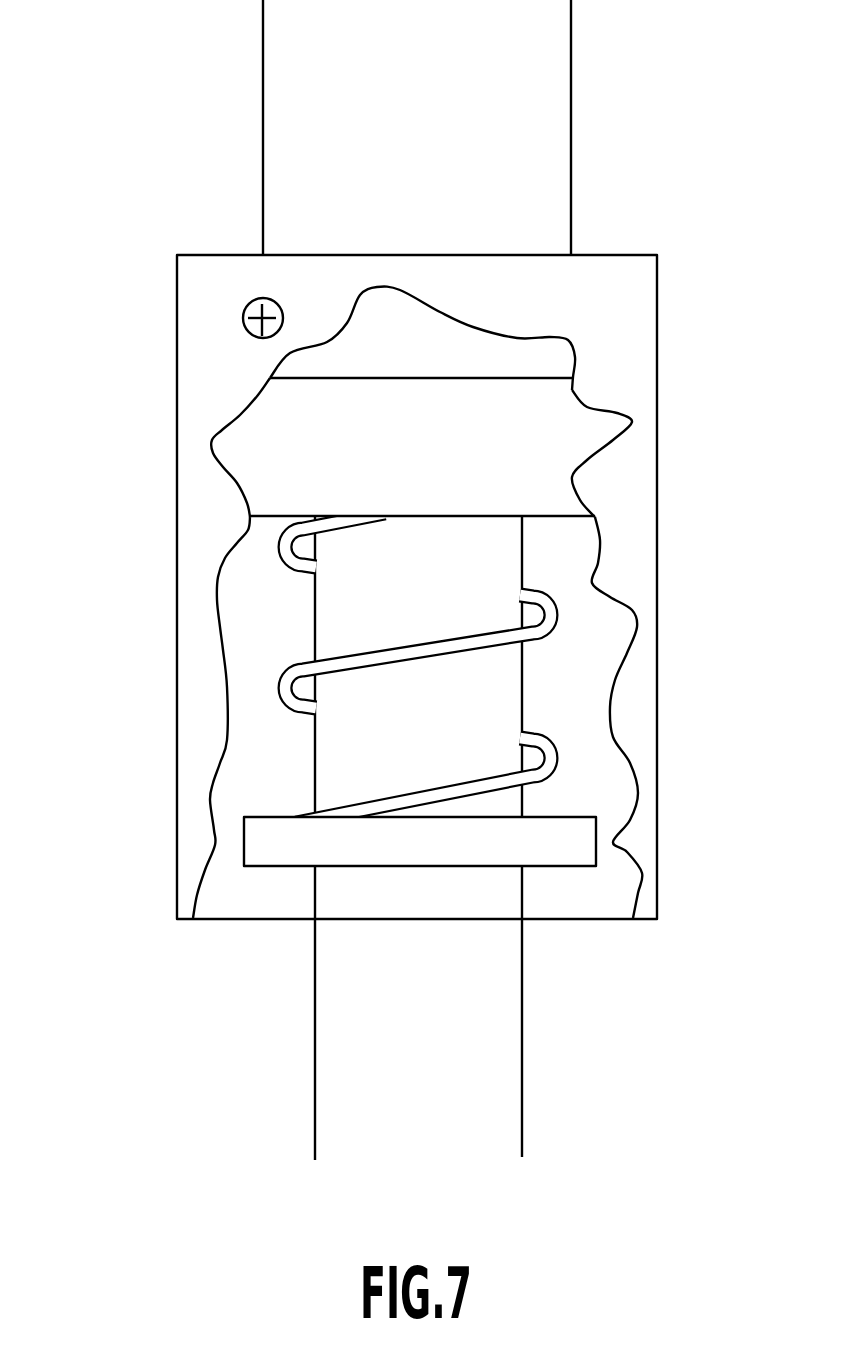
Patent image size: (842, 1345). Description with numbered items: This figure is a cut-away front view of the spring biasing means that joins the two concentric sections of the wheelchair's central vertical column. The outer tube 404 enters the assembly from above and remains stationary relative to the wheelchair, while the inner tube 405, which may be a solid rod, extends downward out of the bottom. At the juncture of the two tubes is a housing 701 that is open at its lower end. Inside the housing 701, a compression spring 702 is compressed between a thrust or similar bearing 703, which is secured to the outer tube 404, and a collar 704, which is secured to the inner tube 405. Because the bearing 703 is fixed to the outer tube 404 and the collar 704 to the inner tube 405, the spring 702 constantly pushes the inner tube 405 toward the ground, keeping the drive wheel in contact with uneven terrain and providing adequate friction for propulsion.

The outer tube 404 is at (547, 358).
The inner tube 405 is at (497, 972).
The housing 701 is at (635, 525).
The compression spring 702 is at (470, 643).
The thrust bearing 703 is at (280, 452).
The collar 704 is at (292, 853).